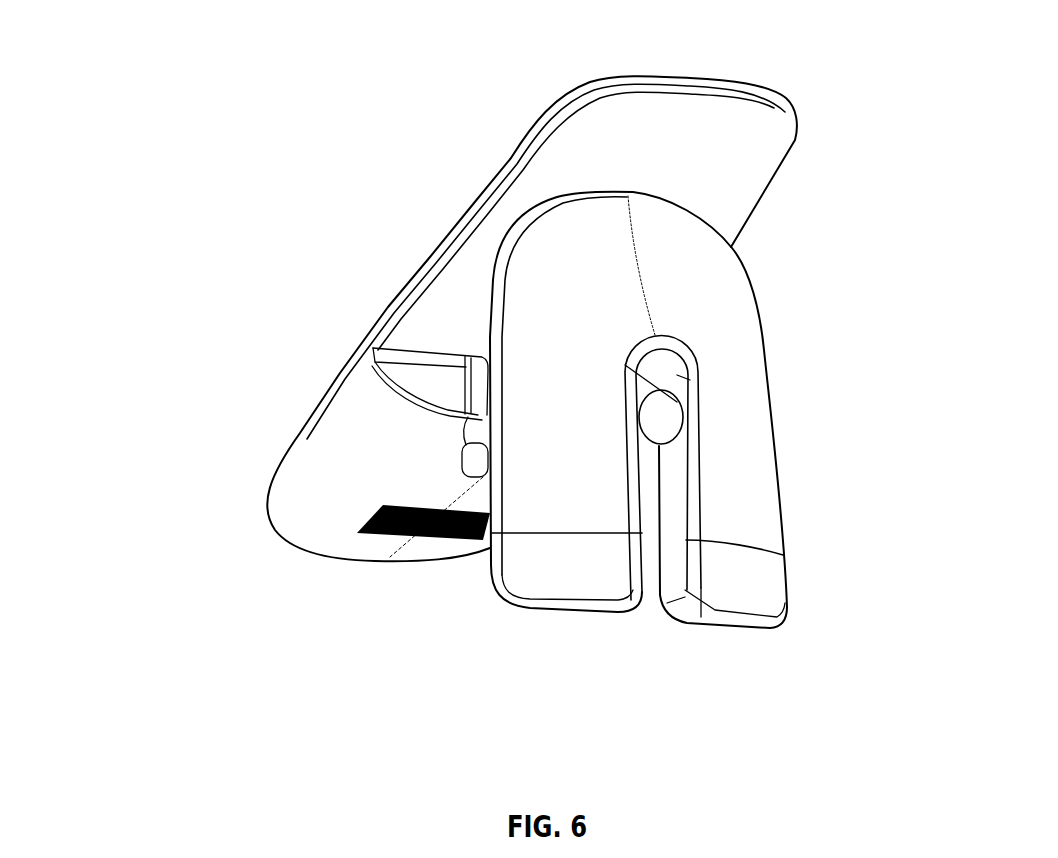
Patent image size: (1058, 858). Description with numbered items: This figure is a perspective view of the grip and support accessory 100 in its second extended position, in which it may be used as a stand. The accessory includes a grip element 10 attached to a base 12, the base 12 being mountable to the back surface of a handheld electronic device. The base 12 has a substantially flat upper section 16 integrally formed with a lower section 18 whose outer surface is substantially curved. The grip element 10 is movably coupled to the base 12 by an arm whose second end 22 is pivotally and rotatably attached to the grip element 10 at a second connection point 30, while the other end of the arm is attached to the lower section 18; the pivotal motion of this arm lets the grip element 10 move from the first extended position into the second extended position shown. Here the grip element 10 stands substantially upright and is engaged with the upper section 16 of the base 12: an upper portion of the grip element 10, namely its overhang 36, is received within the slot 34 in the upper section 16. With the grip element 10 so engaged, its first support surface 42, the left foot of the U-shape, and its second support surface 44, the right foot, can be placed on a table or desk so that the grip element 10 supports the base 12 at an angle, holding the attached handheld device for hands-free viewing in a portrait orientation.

The grip and support accessory 100 is at (184, 85).
The grip element 10 is at (773, 356).
The base 12 is at (346, 271).
The upper section 16 is at (474, 201).
The lower section 18 is at (318, 438).
The second end 22 is at (689, 421).
The second connection point 30 is at (649, 421).
The slot 34 is at (560, 192).
The overhang 36 is at (628, 195).
The first support surface 42 is at (582, 612).
The second support surface 44 is at (758, 626).